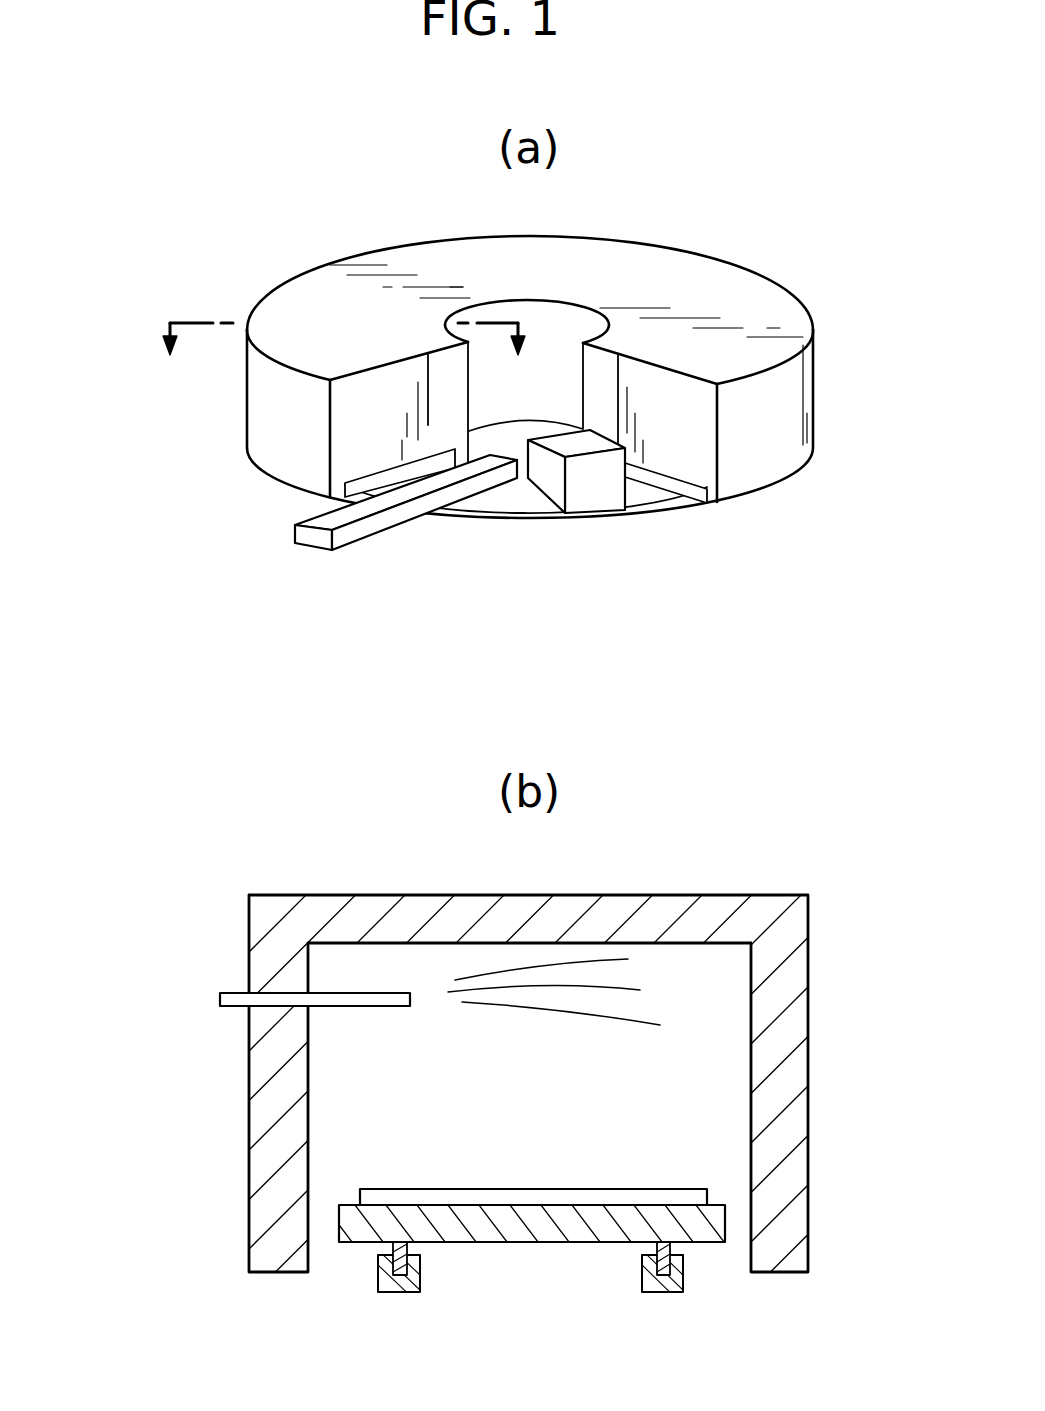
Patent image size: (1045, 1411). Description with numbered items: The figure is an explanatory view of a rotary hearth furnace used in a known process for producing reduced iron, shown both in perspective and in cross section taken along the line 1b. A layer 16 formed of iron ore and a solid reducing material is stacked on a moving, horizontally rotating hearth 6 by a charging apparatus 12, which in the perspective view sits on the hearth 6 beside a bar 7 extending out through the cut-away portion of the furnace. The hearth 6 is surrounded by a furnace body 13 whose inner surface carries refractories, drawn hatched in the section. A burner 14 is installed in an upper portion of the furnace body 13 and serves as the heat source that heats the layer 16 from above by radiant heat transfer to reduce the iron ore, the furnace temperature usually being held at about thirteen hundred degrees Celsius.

The furnace body 13 is at (690, 263).
The moving hearth 6 is at (515, 497).
The bar 7 is at (370, 530).
The charging apparatus 12 is at (604, 497).
The burner 14 is at (228, 992).
The layer 16 is at (608, 1197).
The section line 1(b)–1(b) 1b is at (347, 361).